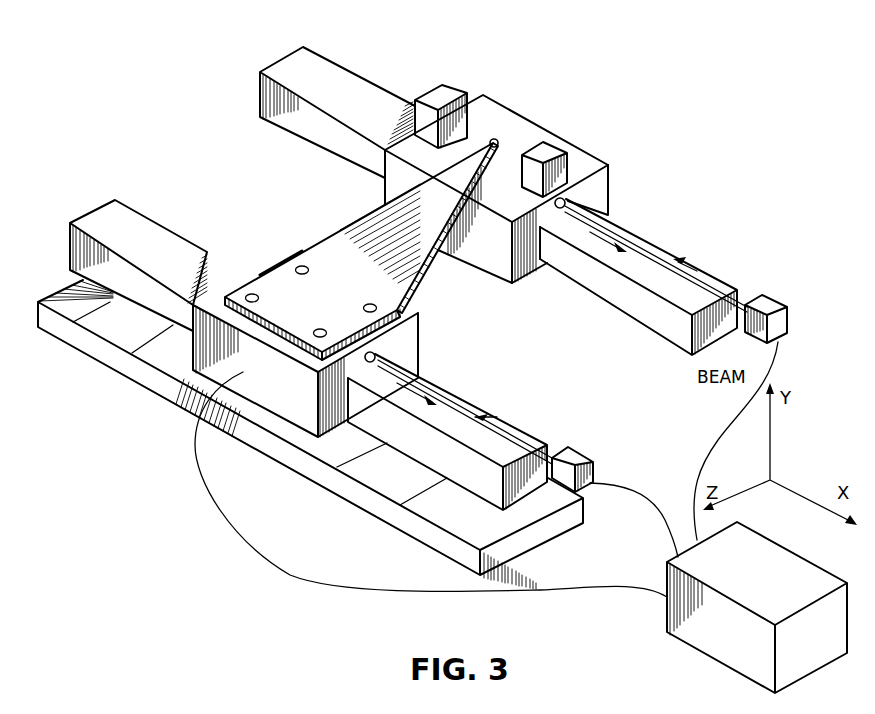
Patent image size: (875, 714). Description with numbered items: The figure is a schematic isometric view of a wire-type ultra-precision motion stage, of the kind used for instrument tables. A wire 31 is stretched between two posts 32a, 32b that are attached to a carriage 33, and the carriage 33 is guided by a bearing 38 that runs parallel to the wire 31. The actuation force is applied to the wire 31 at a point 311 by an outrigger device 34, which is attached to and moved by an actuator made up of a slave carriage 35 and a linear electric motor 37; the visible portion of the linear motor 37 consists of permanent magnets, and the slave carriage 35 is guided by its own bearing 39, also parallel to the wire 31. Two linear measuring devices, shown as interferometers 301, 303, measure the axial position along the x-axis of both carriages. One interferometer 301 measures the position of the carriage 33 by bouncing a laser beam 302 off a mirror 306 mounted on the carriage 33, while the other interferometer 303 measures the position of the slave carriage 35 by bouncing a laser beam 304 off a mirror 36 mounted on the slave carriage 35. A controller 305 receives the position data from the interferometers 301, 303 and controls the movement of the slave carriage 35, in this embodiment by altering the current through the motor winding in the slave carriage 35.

The wire 31 is at (512, 148).
The post 32a is at (450, 87).
The post 32b is at (558, 150).
The carriage 33 is at (610, 183).
The outrigger device 34 is at (337, 230).
The slave carriage 35 is at (419, 347).
The mirror 36 is at (378, 355).
The linear electric motor 37 is at (290, 452).
The bearing 38 is at (317, 48).
The bearing 39 is at (123, 204).
The interferometer 301 is at (765, 296).
The laser beam 302 is at (655, 250).
The interferometer 303 is at (577, 448).
The laser beam 304 is at (447, 393).
The controller 305 is at (773, 541).
The mirror 306 is at (570, 203).
The point 311 is at (494, 139).